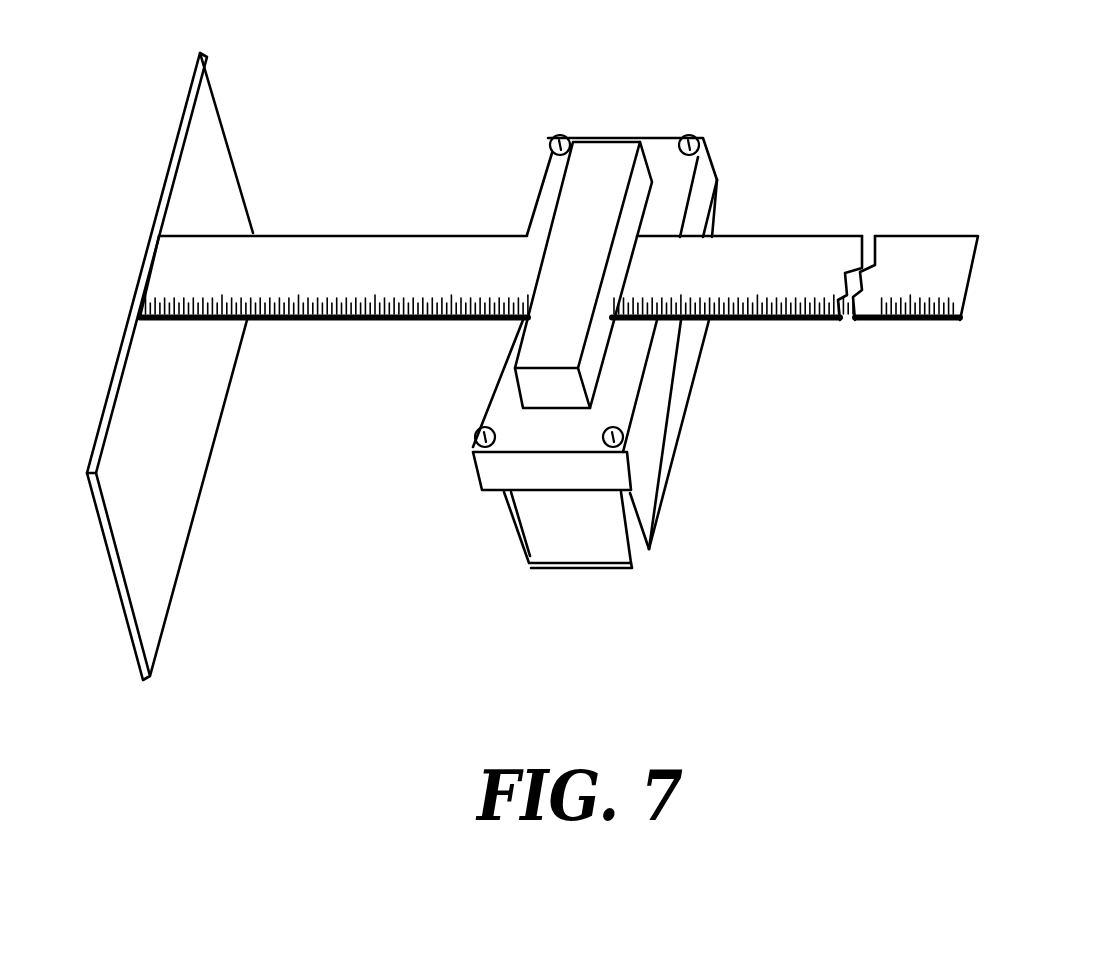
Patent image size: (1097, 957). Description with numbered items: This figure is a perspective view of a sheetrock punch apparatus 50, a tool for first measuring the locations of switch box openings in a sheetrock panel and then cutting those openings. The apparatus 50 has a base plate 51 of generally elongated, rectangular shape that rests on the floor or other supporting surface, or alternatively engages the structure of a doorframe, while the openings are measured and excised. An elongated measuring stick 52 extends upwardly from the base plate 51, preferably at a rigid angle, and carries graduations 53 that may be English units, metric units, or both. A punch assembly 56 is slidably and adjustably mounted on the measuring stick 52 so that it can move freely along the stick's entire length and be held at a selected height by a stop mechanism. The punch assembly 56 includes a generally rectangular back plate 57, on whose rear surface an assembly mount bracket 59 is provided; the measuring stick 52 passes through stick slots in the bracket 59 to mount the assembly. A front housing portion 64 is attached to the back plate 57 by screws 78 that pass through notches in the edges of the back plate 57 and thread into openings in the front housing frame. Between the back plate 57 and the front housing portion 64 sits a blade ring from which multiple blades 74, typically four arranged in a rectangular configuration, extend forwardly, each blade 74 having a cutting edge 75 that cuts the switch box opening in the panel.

The sheetrock punch apparatus 50 is at (982, 368).
The base plate 51 is at (163, 540).
The measuring stick 52 is at (405, 245).
The graduations 53 is at (373, 321).
The punch assembly 56 is at (713, 157).
The back plate 57 is at (548, 208).
The assembly mount bracket 59 is at (603, 160).
The front housing portion 64 is at (542, 160).
The blades 74 is at (572, 547).
The cutting edge 75 is at (603, 568).
The screws 78 is at (475, 437).